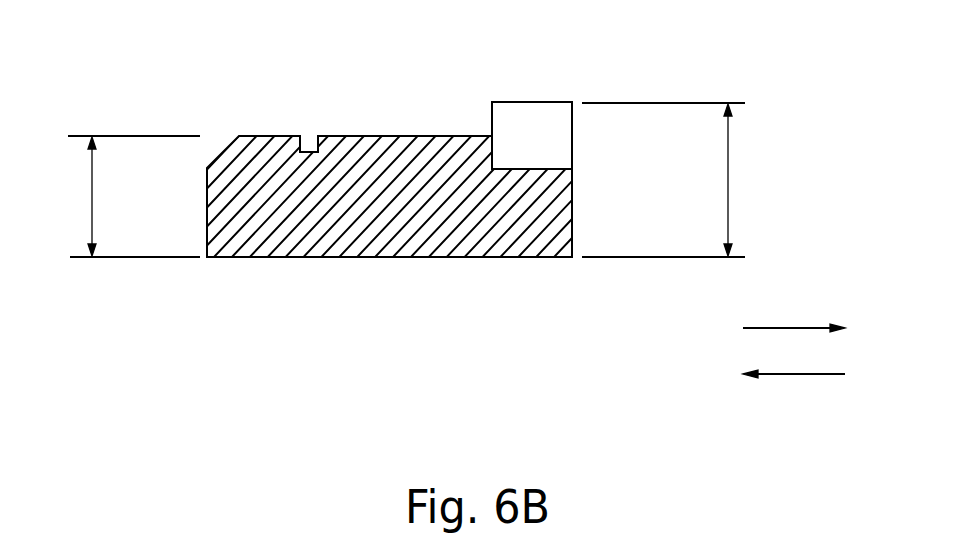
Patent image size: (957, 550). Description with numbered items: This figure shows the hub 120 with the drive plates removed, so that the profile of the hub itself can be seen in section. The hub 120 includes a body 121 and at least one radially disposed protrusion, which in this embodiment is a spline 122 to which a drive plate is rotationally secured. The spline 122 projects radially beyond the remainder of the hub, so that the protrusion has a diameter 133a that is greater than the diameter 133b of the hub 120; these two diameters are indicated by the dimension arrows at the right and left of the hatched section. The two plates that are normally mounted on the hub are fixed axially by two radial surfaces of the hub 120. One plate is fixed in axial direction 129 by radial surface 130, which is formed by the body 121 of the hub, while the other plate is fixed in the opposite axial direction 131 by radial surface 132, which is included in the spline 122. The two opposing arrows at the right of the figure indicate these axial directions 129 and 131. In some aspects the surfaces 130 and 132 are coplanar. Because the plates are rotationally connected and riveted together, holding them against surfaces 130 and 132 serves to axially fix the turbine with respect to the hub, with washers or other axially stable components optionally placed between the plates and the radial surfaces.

The hub 120 is at (262, 135).
The body 121 is at (342, 233).
The spline 122 is at (527, 118).
The axial direction 129 is at (810, 374).
The radial surface 130 is at (492, 147).
The axial direction 131 is at (783, 328).
The radial surface 132 is at (492, 117).
The diameter 133a is at (728, 195).
The diameter 133b is at (92, 195).